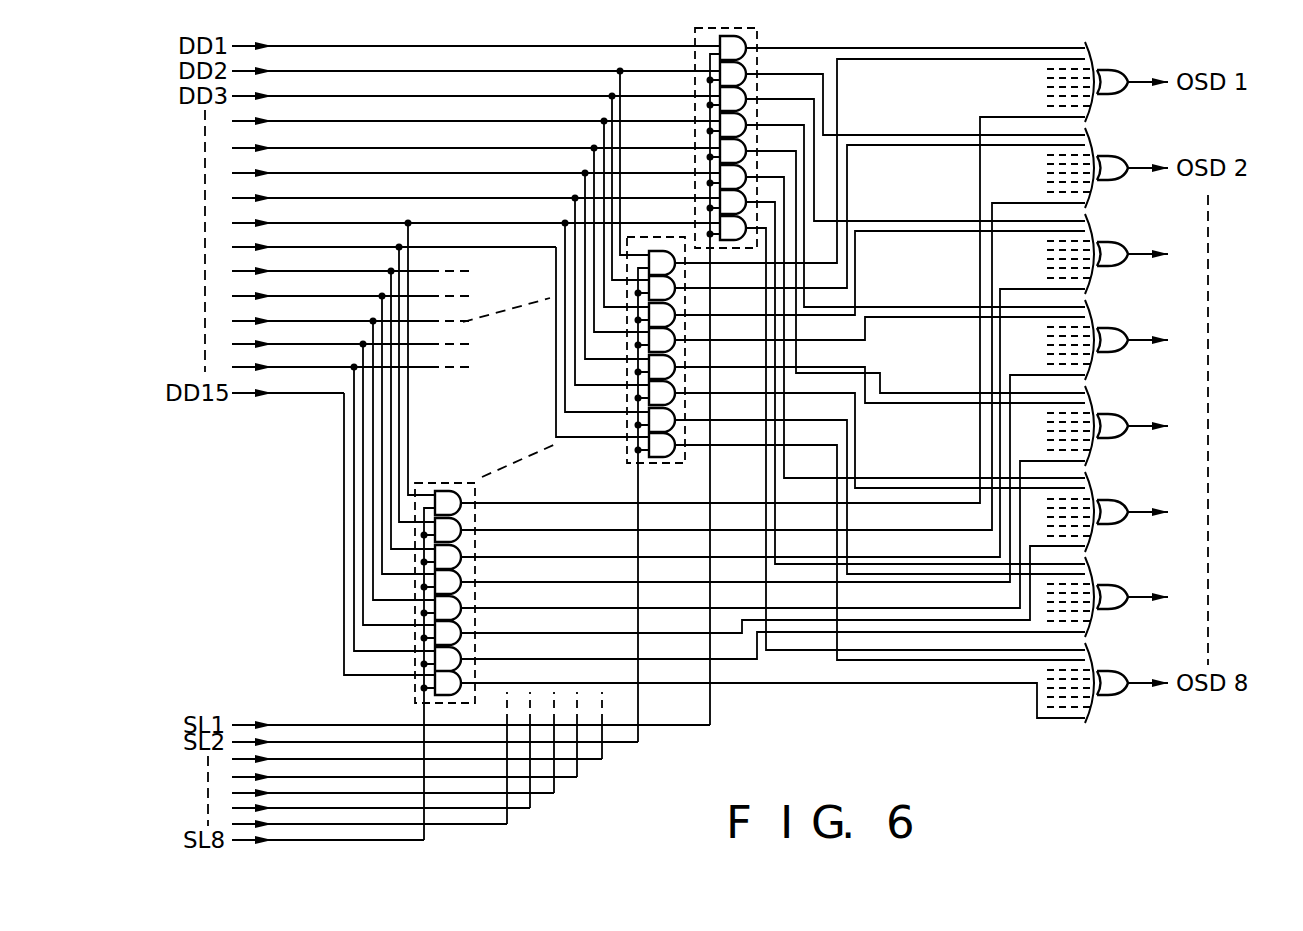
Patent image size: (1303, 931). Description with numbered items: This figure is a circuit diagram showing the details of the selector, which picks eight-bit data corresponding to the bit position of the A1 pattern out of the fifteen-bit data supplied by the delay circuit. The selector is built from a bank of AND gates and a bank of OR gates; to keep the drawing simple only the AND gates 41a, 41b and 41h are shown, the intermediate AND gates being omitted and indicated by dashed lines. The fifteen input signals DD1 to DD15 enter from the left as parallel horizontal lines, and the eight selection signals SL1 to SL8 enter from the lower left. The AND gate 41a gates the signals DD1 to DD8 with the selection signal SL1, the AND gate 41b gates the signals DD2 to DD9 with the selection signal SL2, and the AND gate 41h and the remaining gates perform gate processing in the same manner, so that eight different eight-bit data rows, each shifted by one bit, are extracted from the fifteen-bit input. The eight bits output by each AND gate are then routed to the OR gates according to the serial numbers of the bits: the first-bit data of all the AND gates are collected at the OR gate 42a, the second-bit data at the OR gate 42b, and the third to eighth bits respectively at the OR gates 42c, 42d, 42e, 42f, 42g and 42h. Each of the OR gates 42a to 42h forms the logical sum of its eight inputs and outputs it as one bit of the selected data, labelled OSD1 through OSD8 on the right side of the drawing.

The AND gate 41a is at (757, 36).
The AND gate 41b is at (628, 460).
The AND gate 41h is at (422, 482).
The OR gate 42a is at (1116, 72).
The OR gate 42b is at (1116, 158).
The OR gate 42c is at (1116, 244).
The OR gate 42d is at (1116, 330).
The OR gate 42e is at (1116, 416).
The OR gate 42f is at (1116, 502).
The OR gate 42g is at (1116, 587).
The OR gate 42h is at (1116, 673).